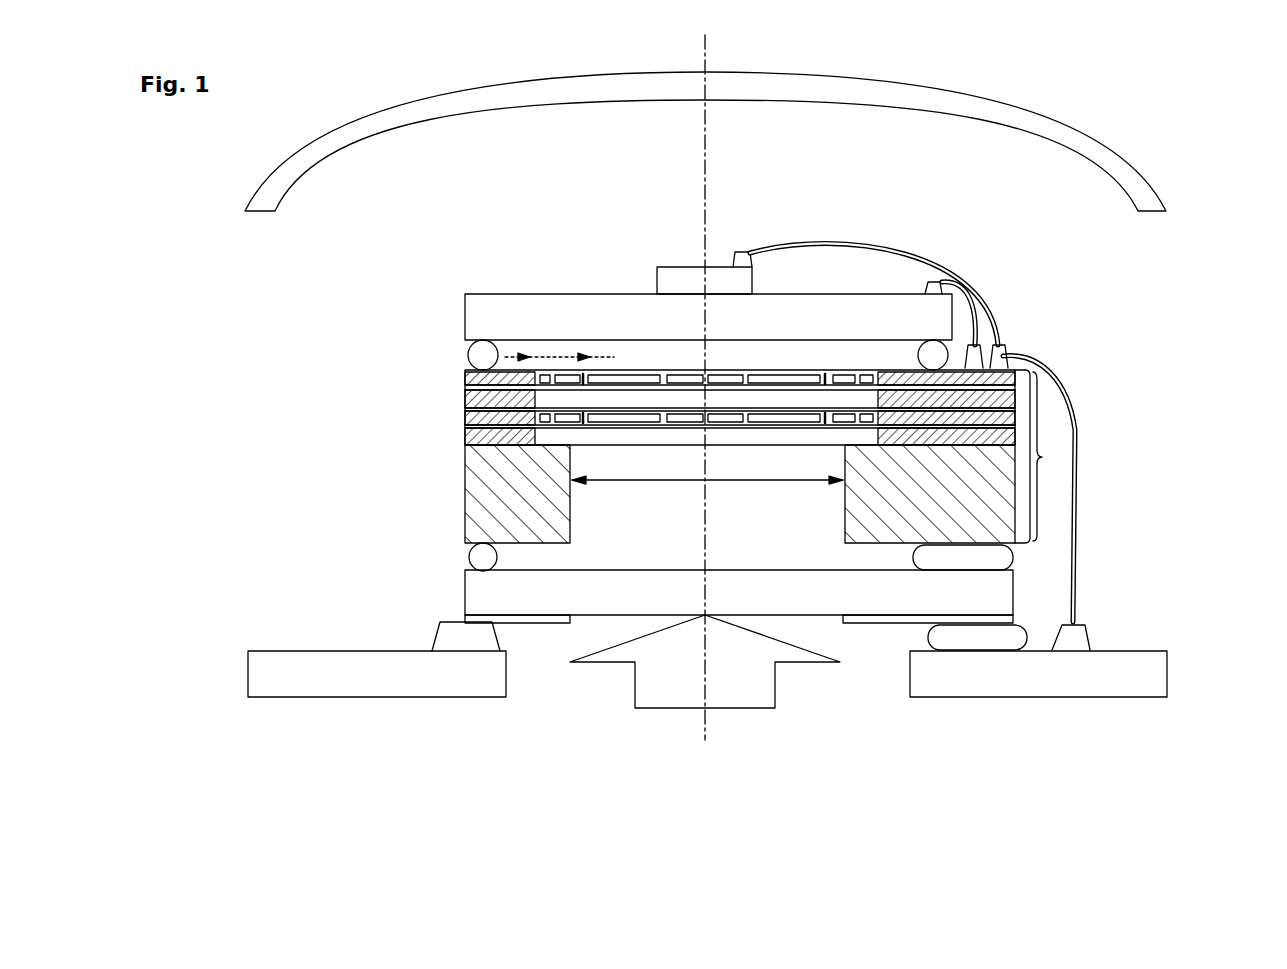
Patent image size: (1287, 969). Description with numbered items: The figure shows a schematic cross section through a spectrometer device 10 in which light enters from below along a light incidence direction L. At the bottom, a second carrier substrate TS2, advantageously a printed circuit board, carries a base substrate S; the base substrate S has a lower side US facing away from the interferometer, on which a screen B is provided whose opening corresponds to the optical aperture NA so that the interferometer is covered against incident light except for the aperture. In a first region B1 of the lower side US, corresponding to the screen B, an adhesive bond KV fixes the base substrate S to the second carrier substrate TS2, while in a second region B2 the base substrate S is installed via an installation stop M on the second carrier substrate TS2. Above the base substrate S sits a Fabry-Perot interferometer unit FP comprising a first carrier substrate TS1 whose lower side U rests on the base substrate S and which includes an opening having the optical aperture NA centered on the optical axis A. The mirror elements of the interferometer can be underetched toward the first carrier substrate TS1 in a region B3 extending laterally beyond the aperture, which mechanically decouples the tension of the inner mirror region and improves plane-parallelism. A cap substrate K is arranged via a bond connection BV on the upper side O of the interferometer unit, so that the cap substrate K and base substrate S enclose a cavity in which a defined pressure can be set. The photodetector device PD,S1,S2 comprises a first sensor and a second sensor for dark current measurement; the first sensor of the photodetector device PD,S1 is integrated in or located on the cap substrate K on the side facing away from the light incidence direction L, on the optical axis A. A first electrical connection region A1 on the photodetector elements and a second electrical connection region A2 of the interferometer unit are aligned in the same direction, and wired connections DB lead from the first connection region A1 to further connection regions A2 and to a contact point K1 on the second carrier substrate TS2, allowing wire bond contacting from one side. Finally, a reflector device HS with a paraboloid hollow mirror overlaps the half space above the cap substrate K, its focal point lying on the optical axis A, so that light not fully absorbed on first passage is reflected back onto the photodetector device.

The reflector device HS is at (1055, 122).
The spectrometer device 10 is at (1180, 240).
The photodetector device with first and second sensors PD,S1,S2 is at (553, 288).
The photodetector device with first sensor PD,S1 is at (672, 278).
The first electrical connection region A1 is at (740, 252).
The wired connection DB is at (833, 245).
The second electrical connection region A2 is at (1002, 346).
The bond connection BV is at (478, 357).
The cap substrate K is at (478, 320).
The upper side O is at (787, 366).
The region of underetching B3 is at (555, 348).
The first carrier substrate TS1 is at (475, 500).
The optical aperture NA is at (707, 467).
The Fabry-Perot interferometer unit FP is at (1045, 456).
The optical axis A is at (705, 548).
The lower side U is at (878, 545).
The base substrate S is at (1003, 595).
The adhesive bond KV is at (1013, 637).
The contact point K1 is at (1078, 637).
The installation stop M is at (438, 635).
The second carrier substrate TS2 is at (252, 680).
The screen B is at (522, 625).
The second region B2 is at (548, 625).
The first region B1 is at (857, 625).
The lower side of base substrate US is at (808, 625).
The light incidence direction L is at (678, 712).